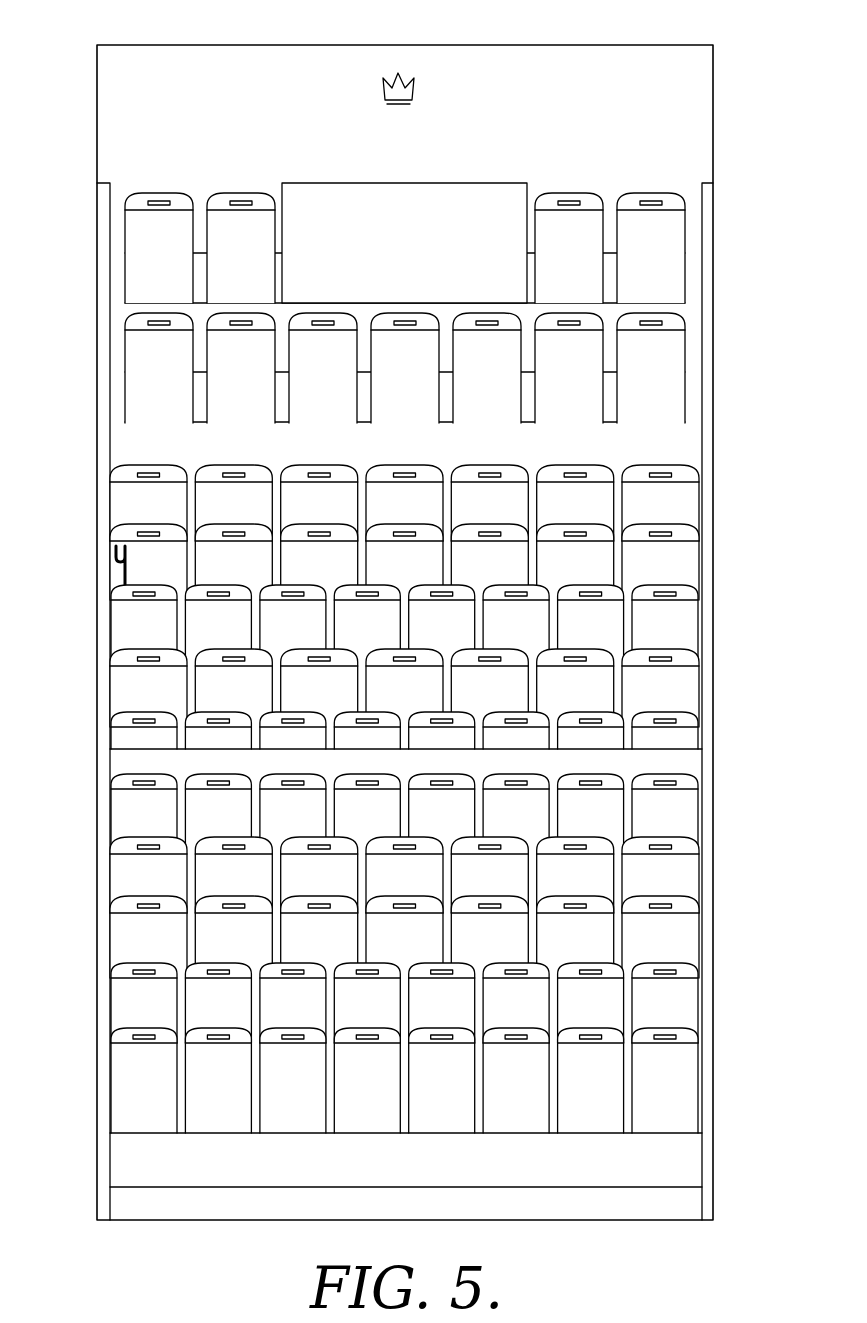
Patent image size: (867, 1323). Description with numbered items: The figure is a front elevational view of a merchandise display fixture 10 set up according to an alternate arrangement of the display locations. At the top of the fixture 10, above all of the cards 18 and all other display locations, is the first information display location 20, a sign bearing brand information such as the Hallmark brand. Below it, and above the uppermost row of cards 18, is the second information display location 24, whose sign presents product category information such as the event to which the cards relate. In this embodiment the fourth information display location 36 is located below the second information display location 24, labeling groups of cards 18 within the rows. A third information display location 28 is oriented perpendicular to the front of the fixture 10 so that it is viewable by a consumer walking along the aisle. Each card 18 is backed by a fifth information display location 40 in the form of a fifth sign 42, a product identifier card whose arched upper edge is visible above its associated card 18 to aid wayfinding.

The merchandise display fixture 10 is at (83, 313).
The card 18 is at (680, 1003).
The first information display location 20 is at (440, 98).
The second information display location 24 is at (528, 192).
The third information display location 28 is at (122, 628).
The fourth information display location 36 is at (605, 453).
The fifth information display location 40 is at (672, 897).
The fifth sign 42 is at (668, 970).